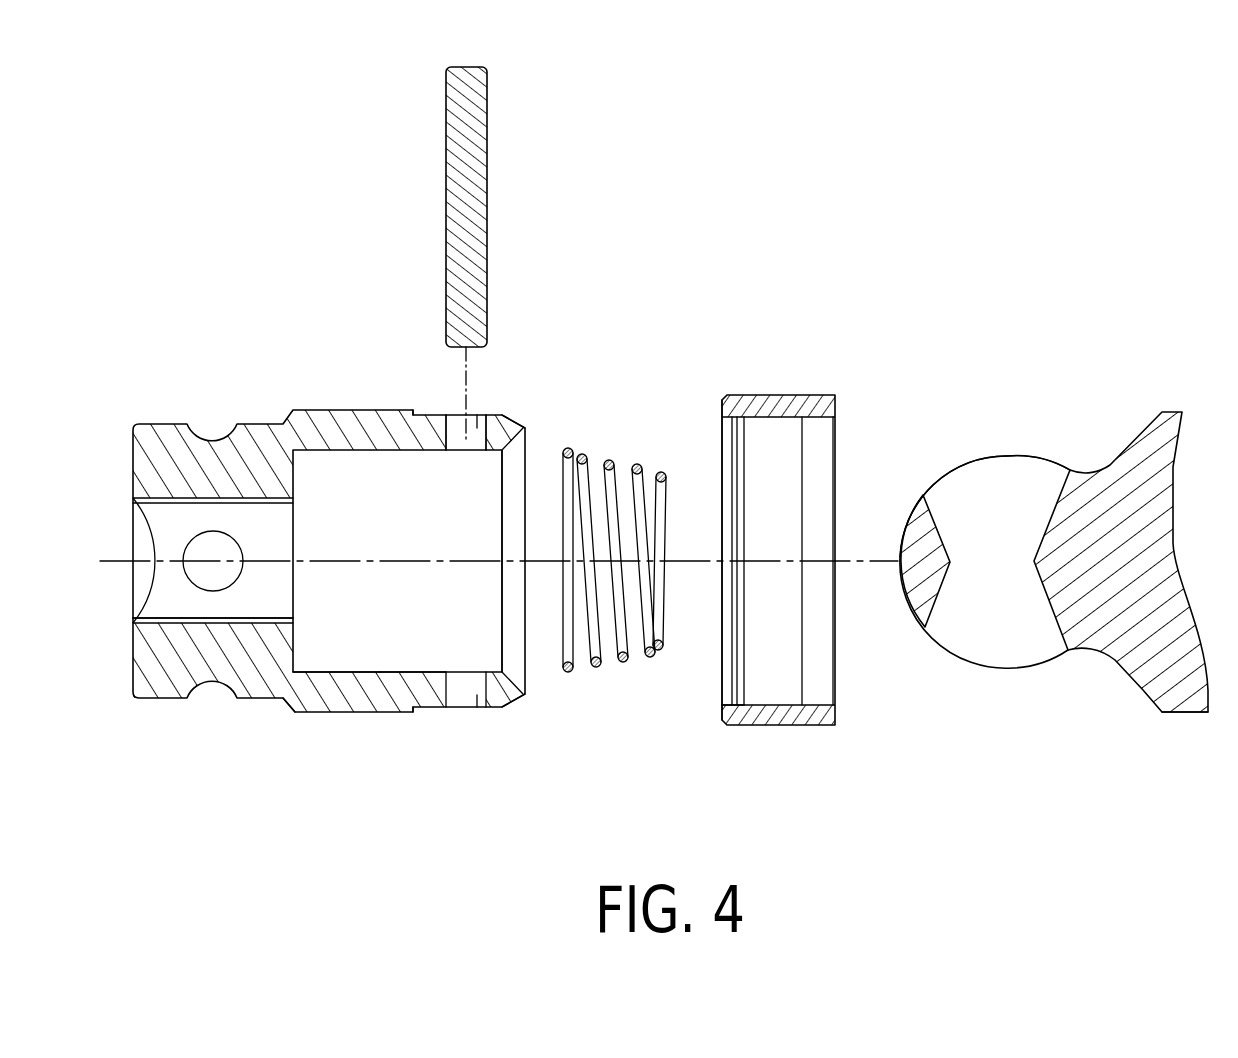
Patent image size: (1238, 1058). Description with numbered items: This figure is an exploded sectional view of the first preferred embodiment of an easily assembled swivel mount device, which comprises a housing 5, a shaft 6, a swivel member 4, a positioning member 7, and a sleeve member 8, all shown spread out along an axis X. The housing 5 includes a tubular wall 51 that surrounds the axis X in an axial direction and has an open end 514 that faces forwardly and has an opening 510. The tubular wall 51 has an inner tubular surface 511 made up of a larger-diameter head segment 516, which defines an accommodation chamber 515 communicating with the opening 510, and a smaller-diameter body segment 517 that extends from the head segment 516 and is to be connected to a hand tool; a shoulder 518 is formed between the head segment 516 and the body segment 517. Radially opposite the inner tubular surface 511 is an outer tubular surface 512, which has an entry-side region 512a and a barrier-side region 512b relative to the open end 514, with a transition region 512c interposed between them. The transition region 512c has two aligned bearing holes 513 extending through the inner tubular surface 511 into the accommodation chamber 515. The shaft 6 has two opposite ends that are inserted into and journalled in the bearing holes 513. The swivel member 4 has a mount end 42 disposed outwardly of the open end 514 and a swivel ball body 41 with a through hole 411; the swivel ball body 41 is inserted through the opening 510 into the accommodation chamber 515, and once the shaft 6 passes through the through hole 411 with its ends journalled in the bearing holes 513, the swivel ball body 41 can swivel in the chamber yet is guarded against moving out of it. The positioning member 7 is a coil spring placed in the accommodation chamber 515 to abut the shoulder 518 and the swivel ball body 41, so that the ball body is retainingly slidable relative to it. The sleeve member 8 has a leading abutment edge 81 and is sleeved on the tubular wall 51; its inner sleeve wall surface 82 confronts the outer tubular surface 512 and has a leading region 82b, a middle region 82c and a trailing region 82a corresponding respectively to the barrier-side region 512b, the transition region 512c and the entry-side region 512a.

The swivel member 4 is at (1057, 563).
The swivel ball body 41 is at (927, 597).
The through hole 411 is at (995, 475).
The mount end 42 is at (1193, 707).
The housing 5 is at (369, 534).
The tubular wall 51 is at (210, 543).
The opening 510 is at (513, 662).
The inner tubular surface 511 is at (420, 665).
The outer tubular surface 512 is at (441, 462).
The entry-side region 512a is at (507, 418).
The barrier-side region 512b is at (417, 413).
The transition region 512c is at (446, 417).
The bearing holes 513 is at (477, 425).
The open end 514 is at (523, 425).
The accommodation chamber 515 is at (387, 650).
The head segment 516 is at (353, 663).
The body segment 517 is at (208, 617).
The shoulder 518 is at (313, 680).
The shaft 6 is at (450, 153).
The positioning member 7 is at (613, 490).
The sleeve member 8 is at (778, 534).
The leading abutment edge 81 is at (723, 405).
The inner sleeve wall surface 82 is at (766, 427).
The trailing region 82a is at (823, 688).
The leading region 82b is at (723, 700).
The middle region 82c is at (774, 690).
The axis X is at (866, 563).